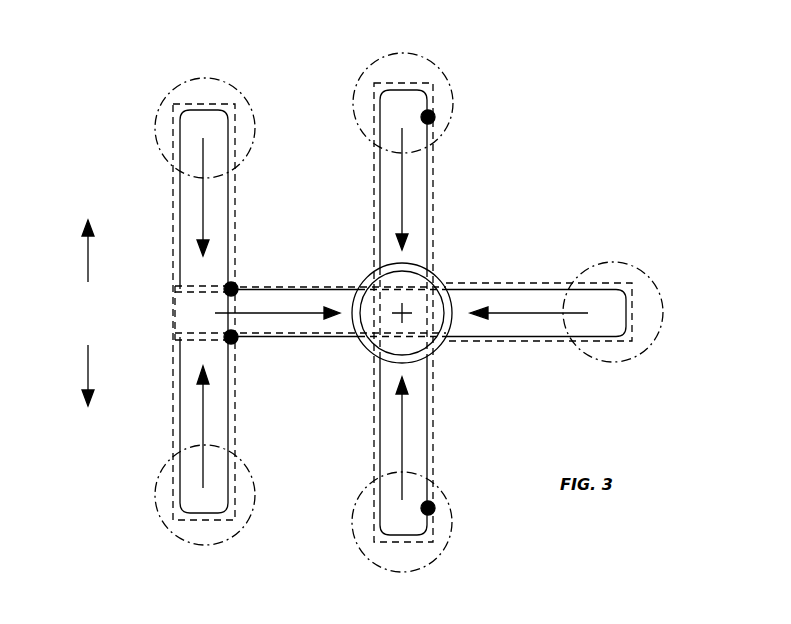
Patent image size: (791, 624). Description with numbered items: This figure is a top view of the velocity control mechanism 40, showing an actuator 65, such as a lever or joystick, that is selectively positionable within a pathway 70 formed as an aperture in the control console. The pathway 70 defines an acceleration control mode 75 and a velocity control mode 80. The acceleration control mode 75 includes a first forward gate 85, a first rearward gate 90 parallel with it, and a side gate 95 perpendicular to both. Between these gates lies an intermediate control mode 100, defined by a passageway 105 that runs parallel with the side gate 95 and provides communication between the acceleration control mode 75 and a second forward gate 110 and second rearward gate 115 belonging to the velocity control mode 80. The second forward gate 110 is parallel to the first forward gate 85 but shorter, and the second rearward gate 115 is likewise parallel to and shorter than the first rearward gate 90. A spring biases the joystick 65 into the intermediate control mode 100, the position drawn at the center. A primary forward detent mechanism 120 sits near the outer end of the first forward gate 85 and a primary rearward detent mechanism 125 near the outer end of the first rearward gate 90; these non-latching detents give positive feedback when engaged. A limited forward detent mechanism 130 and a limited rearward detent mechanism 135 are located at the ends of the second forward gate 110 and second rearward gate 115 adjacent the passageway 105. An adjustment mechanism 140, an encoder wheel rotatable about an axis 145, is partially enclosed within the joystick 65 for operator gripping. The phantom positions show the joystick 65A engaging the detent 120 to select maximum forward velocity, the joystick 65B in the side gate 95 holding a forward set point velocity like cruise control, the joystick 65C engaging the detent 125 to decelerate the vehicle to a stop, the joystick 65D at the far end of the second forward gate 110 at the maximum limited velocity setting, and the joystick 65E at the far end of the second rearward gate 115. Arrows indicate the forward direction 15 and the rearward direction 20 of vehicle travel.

The forward direction 15 is at (88, 256).
The rearward direction 20 is at (88, 372).
The velocity control mechanism 40 is at (638, 134).
The actuator 65 is at (434, 275).
The joystick 65A is at (450, 78).
The joystick 65B is at (630, 264).
The joystick 65C is at (438, 557).
The joystick 65D is at (158, 118).
The joystick 65E is at (172, 532).
The pathway 70 is at (314, 190).
The acceleration control mode 75 is at (372, 188).
The velocity control mode 80 is at (173, 211).
The first forward gate 85 is at (433, 197).
The first rearward gate 90 is at (433, 410).
The side gate 95 is at (514, 284).
The intermediate control mode 100 is at (172, 312).
The passageway 105 is at (306, 338).
The second forward gate 110 is at (230, 222).
The second rearward gate 115 is at (230, 412).
The primary forward detent mechanism 120 is at (434, 117).
The primary rearward detent mechanism 125 is at (434, 508).
The limited forward detent mechanism 130 is at (236, 283).
The limited rearward detent mechanism 135 is at (236, 342).
The adjustment mechanism 140 is at (440, 348).
The axis 145 is at (400, 311).